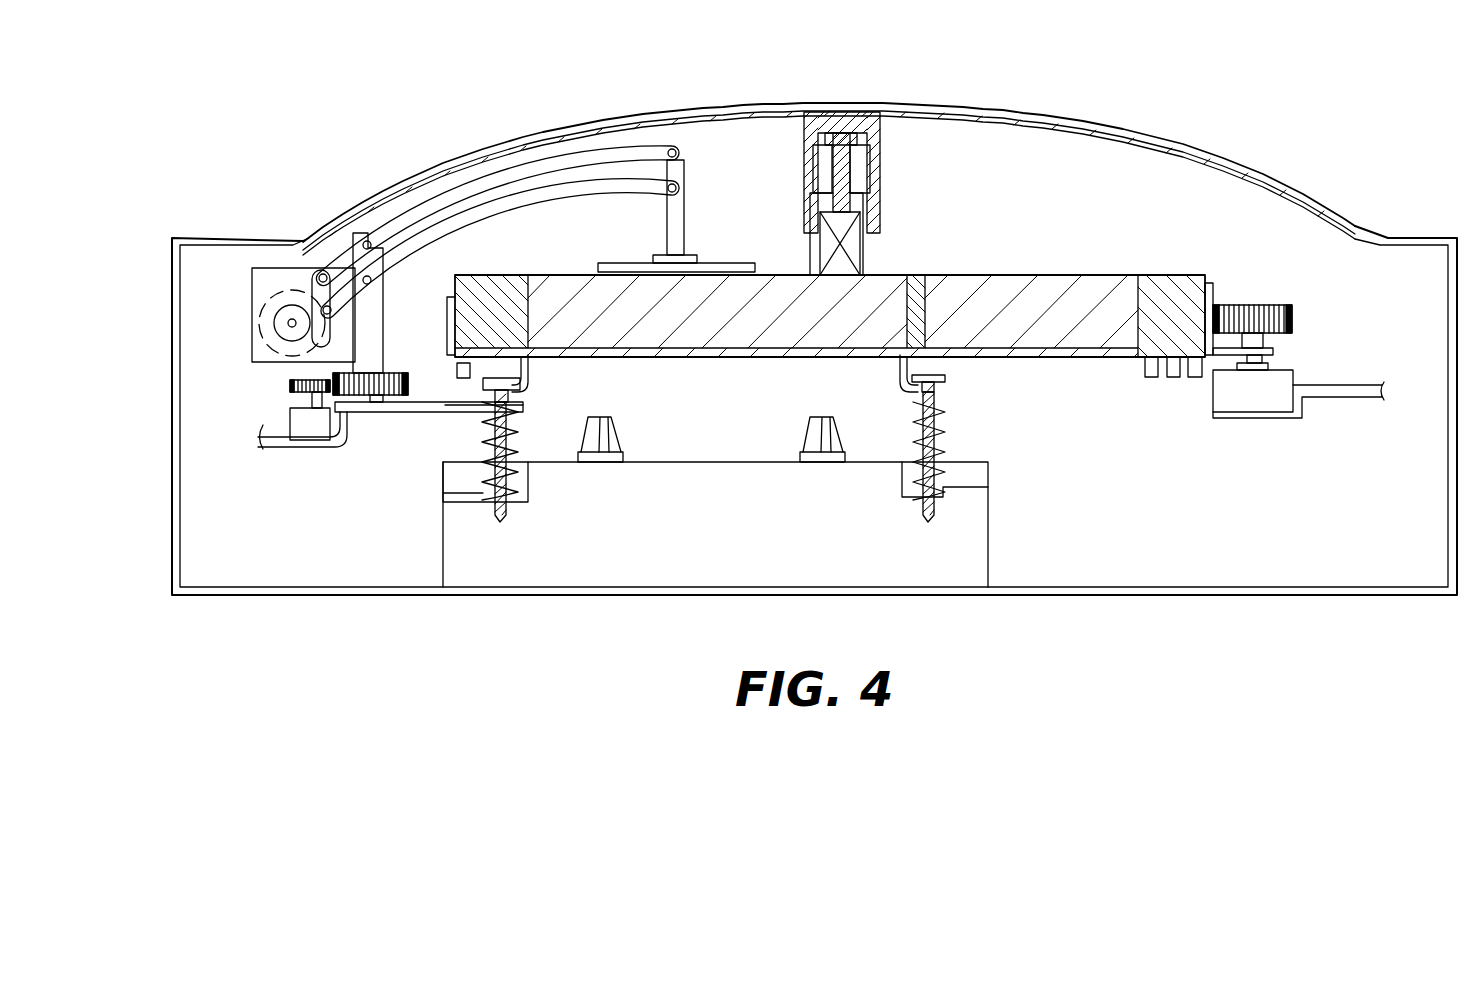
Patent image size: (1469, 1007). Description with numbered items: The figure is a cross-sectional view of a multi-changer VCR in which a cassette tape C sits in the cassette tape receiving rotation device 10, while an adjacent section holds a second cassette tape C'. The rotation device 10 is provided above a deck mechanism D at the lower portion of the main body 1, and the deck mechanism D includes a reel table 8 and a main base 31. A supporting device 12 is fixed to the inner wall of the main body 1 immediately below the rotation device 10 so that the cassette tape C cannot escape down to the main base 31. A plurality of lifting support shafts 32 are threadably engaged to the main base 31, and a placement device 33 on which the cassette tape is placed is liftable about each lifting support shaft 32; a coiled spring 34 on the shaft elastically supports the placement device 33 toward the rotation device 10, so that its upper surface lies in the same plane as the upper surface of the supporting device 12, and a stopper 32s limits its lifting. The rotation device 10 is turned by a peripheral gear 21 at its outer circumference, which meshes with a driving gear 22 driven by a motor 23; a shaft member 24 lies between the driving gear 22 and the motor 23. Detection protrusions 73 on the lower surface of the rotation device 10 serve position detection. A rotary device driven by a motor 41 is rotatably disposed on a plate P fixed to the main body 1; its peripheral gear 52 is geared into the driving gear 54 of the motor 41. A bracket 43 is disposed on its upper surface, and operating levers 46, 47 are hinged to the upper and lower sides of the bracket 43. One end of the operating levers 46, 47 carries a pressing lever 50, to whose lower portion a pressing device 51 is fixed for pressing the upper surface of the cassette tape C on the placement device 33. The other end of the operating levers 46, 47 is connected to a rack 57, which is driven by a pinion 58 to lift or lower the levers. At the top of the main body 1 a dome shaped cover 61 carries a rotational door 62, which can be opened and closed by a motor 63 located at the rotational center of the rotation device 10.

The multi-VCR main body 1 is at (182, 240).
The reel table 8 is at (598, 417).
The cassette tape receiving rotation device 10 is at (1170, 266).
The supporting device 12 is at (1080, 358).
The peripheral gear 21 is at (1215, 283).
The driving gear 22 is at (1265, 305).
The motor 23 is at (1275, 408).
The shaft plate 24 is at (1275, 353).
The main base 31 is at (975, 528).
The lifting support shaft 32 is at (940, 410).
The stopper 32s is at (946, 366).
The placement device 33 is at (695, 358).
The coiled spring 34 is at (945, 435).
The motor 41 is at (305, 437).
The bracket 43 is at (362, 233).
The operating lever 46 is at (440, 190).
The operating lever 47 is at (527, 200).
The pressing lever 50 is at (670, 170).
The pressing device 51 is at (730, 265).
The peripheral gear 52 is at (385, 398).
The driving gear 54 is at (295, 385).
The rack 57 is at (311, 282).
The pinion 58 is at (275, 325).
The dome shaped cover 61 is at (940, 100).
The rotational door 62 is at (945, 122).
The motor 63 is at (882, 245).
The detection protrusion 73 is at (1172, 378).
The cassette tape C is at (760, 213).
The carriage section C' is at (1016, 247).
The plate P is at (265, 452).
The deck mechanism D is at (728, 542).